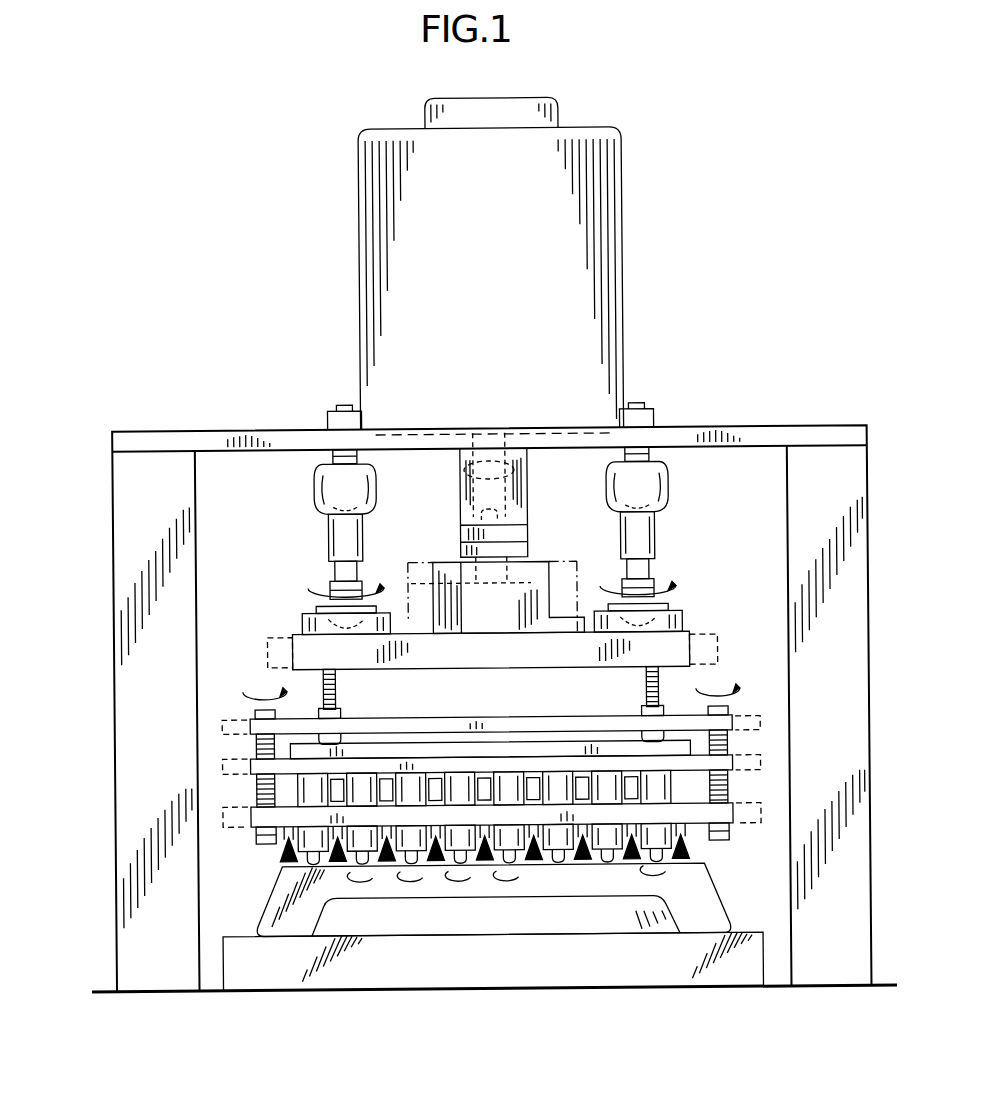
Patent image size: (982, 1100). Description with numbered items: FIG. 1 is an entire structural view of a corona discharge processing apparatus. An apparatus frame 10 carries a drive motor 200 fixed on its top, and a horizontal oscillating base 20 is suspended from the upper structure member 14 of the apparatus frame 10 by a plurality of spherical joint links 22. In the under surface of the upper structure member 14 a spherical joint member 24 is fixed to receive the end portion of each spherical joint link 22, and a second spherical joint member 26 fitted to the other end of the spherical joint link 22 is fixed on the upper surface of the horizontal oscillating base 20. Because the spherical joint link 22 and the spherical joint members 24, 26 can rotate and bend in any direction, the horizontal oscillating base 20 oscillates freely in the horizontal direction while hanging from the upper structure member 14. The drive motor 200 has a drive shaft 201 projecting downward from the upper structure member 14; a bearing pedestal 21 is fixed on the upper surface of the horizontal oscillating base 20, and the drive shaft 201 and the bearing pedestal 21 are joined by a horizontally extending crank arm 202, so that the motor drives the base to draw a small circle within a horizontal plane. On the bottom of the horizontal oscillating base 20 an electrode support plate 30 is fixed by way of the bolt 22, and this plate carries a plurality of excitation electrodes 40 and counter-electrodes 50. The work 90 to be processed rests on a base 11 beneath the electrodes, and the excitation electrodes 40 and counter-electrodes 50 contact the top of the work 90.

The apparatus frame 10 is at (140, 568).
The base 11 is at (402, 966).
The upper structure member 14 is at (766, 428).
The horizontal oscillating base 20 is at (300, 643).
The bearing pedestal 21 is at (437, 582).
The spherical joint link 22 is at (654, 521).
The spherical joint member 24 is at (653, 456).
The spherical joint member 26 is at (672, 606).
The electrode support plate 30 is at (738, 714).
The excitation electrodes 40 is at (666, 856).
The counter-electrodes 50 is at (692, 850).
The work 90 is at (442, 892).
The drive motor 200 is at (582, 283).
The drive shaft 201 is at (508, 494).
The crank arm 202 is at (513, 550).